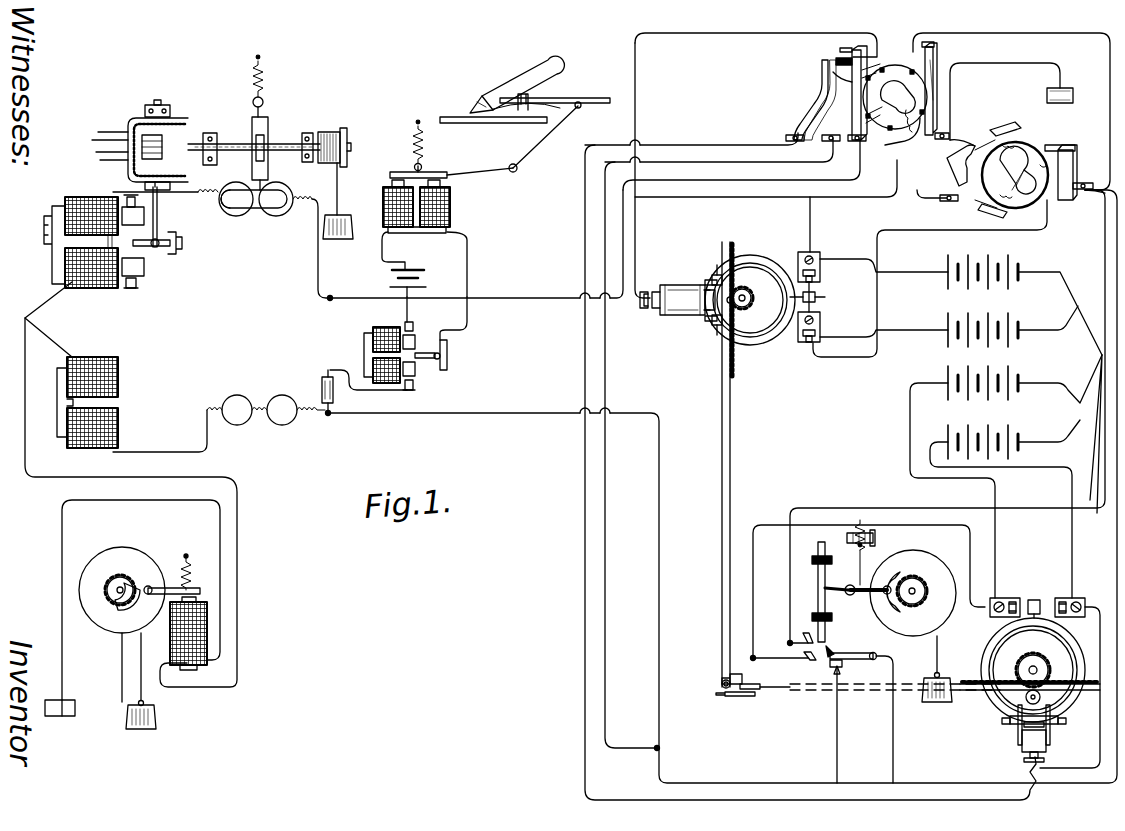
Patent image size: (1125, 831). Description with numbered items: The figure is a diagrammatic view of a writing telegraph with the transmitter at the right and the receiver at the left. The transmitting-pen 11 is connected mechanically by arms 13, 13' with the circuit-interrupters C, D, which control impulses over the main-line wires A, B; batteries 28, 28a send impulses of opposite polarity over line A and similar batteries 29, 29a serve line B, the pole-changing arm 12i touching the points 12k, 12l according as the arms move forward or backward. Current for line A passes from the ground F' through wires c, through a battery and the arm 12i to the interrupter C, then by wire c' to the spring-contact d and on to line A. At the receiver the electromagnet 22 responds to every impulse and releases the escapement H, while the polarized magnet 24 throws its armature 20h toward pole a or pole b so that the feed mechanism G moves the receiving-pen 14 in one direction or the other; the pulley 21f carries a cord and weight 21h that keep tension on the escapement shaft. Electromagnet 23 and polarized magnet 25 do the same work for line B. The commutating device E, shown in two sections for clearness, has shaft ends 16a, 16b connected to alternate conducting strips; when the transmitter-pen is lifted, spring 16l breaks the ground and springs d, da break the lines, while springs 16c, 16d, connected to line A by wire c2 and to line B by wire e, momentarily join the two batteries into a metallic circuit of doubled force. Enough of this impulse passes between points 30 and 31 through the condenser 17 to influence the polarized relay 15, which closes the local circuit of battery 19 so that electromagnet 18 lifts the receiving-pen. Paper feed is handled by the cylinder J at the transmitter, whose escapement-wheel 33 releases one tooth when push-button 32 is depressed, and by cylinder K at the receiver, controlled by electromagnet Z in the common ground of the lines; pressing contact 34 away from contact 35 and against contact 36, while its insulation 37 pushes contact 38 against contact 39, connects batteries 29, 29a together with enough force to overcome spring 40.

The transmitting-pen 11 is at (753, 699).
The pole-changing arm 12i is at (822, 297).
The contact point 12k is at (1062, 598).
The contact point 12l is at (1020, 598).
The transmitter-arm 13 is at (710, 464).
The transmitter-arm 13' is at (889, 700).
The receiving-pen 14 is at (535, 65).
The polarized relay 15 is at (398, 343).
The commutator-shaft end 16a is at (1010, 173).
The commutator-shaft end 16b is at (884, 140).
The spring 16c is at (950, 180).
The spring 16d is at (958, 251).
The spring 16l is at (935, 78).
The condenser 17 is at (315, 391).
The pen-lifting and lowering electromagnet 18 is at (386, 202).
The battery of the local receiving-circuit 19 is at (414, 272).
The armature 20h is at (153, 250).
The pulley 21f is at (346, 136).
The weight 21h is at (337, 209).
The electromagnet 22 is at (222, 240).
The electromagnet 23 is at (219, 415).
The polarized magnet 24 is at (70, 283).
The polarized magnet 25 is at (131, 484).
The battery 28 is at (1025, 303).
The battery 28a is at (1013, 326).
The battery 29 is at (1006, 476).
The battery 29a is at (1005, 508).
The circuit point 30 is at (329, 307).
The circuit point 31 is at (327, 425).
The push-button 32 is at (821, 588).
The escapement-wheel 33 is at (926, 588).
The contact 34 is at (820, 656).
The contact 35 is at (808, 640).
The contact 36 is at (805, 655).
The insulation 37 is at (842, 650).
The contact 38 is at (845, 663).
The contact 39 is at (840, 680).
The spring 40 is at (196, 561).
The main-line wire A is at (477, 244).
The main-line wire B is at (722, 486).
The circuit-interrupter C is at (717, 290).
The circuit-interrupter D is at (1000, 652).
The commutating device E is at (1011, 120).
The ground F' is at (1070, 94).
The feed mechanism G is at (140, 140).
The escapement H is at (275, 138).
The paper cylinder J is at (869, 611).
The paper cylinder K is at (132, 608).
The electromagnet Z is at (166, 657).
The pole a is at (131, 289).
The pole b is at (140, 226).
The wire c is at (947, 416).
The wire c' is at (855, 165).
The wire c2 is at (810, 466).
The spring-contact d is at (850, 54).
The spring da is at (812, 96).
The wire e is at (1095, 542).